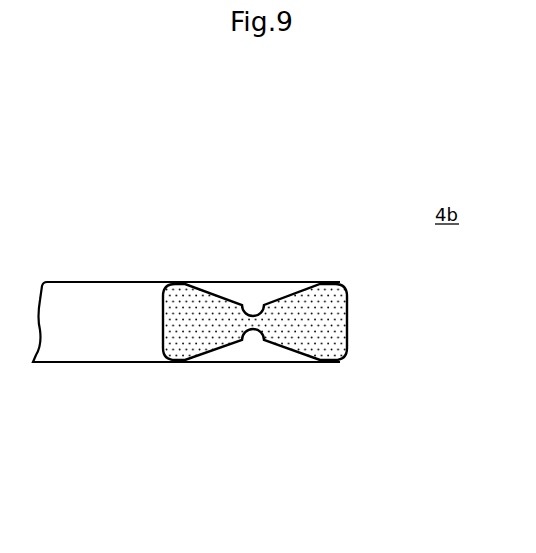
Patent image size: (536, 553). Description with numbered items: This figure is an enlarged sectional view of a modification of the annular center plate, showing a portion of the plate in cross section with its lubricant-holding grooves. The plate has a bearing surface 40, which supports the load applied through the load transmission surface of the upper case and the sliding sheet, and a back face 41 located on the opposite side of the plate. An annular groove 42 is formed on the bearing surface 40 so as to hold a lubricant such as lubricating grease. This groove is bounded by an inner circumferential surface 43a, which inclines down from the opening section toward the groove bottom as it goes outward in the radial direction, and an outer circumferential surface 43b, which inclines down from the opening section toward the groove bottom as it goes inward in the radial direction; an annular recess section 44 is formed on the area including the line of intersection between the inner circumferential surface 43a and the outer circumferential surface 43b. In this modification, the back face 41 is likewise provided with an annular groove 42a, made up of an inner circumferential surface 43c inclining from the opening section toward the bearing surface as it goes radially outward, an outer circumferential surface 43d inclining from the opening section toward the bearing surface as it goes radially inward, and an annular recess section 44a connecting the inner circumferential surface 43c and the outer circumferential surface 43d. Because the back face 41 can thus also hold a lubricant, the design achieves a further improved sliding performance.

The bearing surface 40 is at (125, 281).
The back face 41 is at (113, 363).
The annular groove 42 is at (255, 332).
The annular groove 42a is at (242, 345).
The inner circumferential surface 43a is at (205, 290).
The outer circumferential surface 43b is at (305, 292).
The inner circumferential surface 43c is at (207, 357).
The outer circumferential surface 43d is at (300, 357).
The annular recess section 44 is at (255, 304).
The annular recess section 44a is at (255, 337).